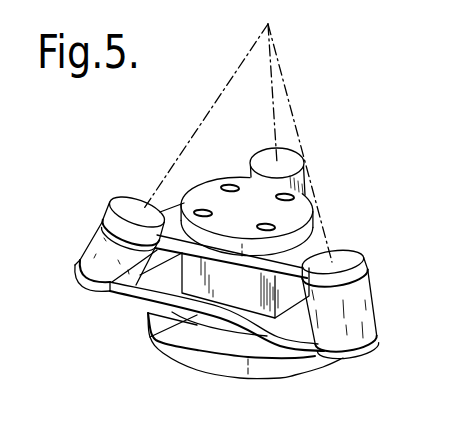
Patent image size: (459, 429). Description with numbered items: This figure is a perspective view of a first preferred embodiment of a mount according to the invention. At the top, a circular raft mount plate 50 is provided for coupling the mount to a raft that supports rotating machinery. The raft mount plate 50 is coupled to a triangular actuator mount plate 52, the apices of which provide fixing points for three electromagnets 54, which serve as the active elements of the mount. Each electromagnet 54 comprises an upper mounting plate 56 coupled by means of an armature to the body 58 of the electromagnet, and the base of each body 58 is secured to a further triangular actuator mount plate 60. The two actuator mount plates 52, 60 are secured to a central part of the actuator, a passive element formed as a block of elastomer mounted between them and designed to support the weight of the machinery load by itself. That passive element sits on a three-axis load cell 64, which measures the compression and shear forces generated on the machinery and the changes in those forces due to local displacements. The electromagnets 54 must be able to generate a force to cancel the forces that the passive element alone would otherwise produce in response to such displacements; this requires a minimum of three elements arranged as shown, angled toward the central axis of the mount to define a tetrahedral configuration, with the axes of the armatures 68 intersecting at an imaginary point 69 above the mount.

The circular raft mount plate 50 is at (311, 201).
The triangular actuator mount plate 52 is at (327, 258).
The electromagnet 54 is at (362, 306).
The upper mounting plate 56 is at (137, 203).
The body of the electromagnet 58 is at (110, 241).
The further triangular actuator mount plate 60 is at (150, 325).
The three-axis load cell 64 is at (305, 368).
The axis of the armature 68 is at (197, 127).
The imaginary point 69 is at (232, 63).